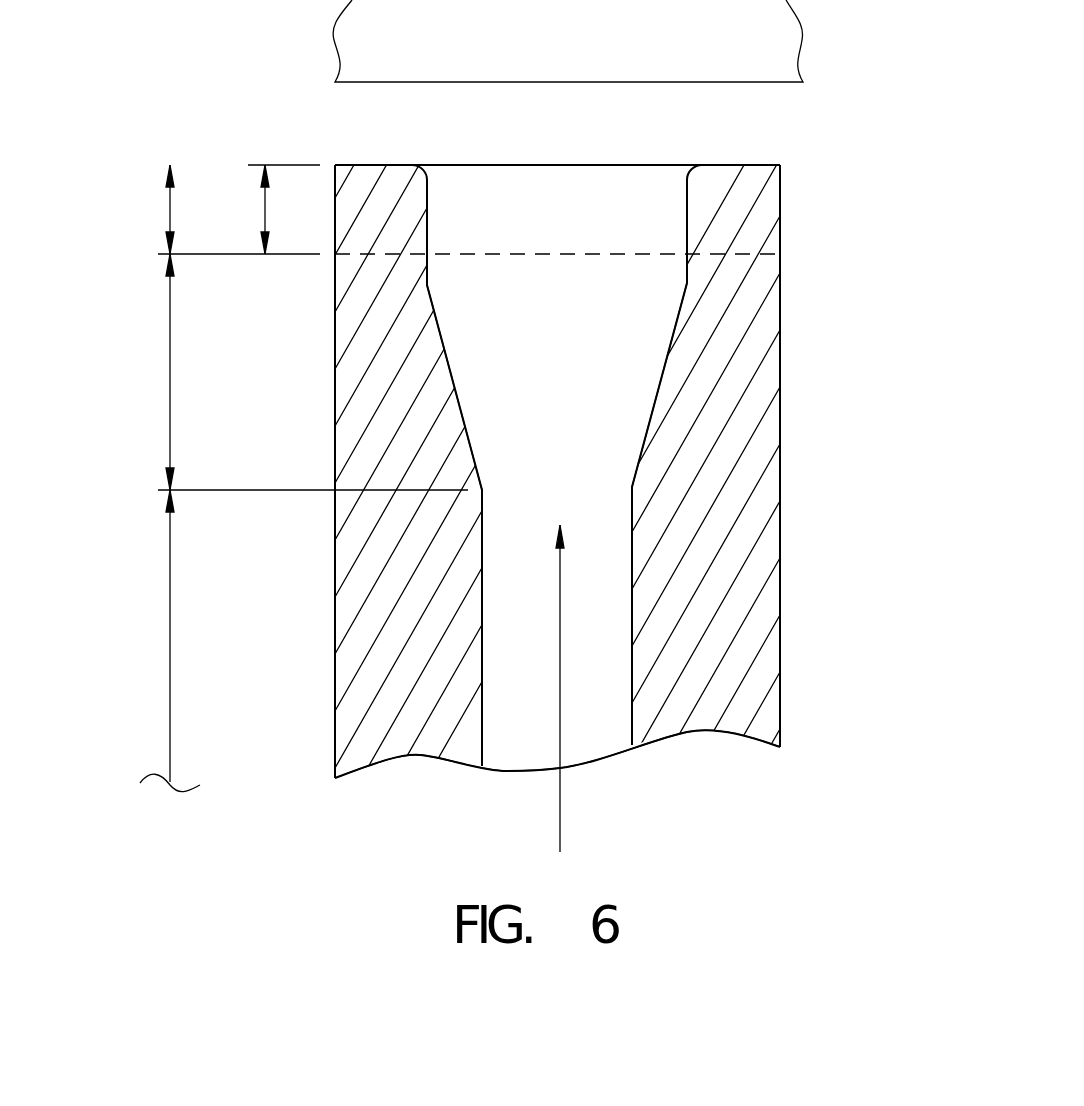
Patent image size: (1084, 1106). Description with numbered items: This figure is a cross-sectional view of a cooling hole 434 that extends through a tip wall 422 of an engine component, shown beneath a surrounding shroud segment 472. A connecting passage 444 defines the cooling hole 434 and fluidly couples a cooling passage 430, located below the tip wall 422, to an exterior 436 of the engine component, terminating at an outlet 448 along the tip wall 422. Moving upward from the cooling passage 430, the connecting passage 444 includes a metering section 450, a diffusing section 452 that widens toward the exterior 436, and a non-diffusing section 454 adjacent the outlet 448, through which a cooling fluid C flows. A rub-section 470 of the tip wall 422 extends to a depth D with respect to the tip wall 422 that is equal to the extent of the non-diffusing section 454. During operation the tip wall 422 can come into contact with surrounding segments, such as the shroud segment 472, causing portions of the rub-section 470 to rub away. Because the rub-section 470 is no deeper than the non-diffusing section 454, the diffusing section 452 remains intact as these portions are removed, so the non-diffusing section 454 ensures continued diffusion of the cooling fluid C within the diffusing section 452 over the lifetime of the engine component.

The shroud segment 472 is at (535, 53).
The exterior 436 is at (535, 131).
The outlet 448 is at (637, 162).
The rub-section 470 is at (820, 252).
The non-diffusing section 454 is at (170, 208).
The depth D is at (265, 203).
The diffusing section 452 is at (172, 375).
The metering section 450 is at (172, 632).
The tip wall 422 is at (728, 387).
The connecting passage 444 is at (529, 471).
The cooling hole 434 is at (588, 590).
The cooling passage 430 is at (632, 810).
The cooling fluid C is at (561, 638).